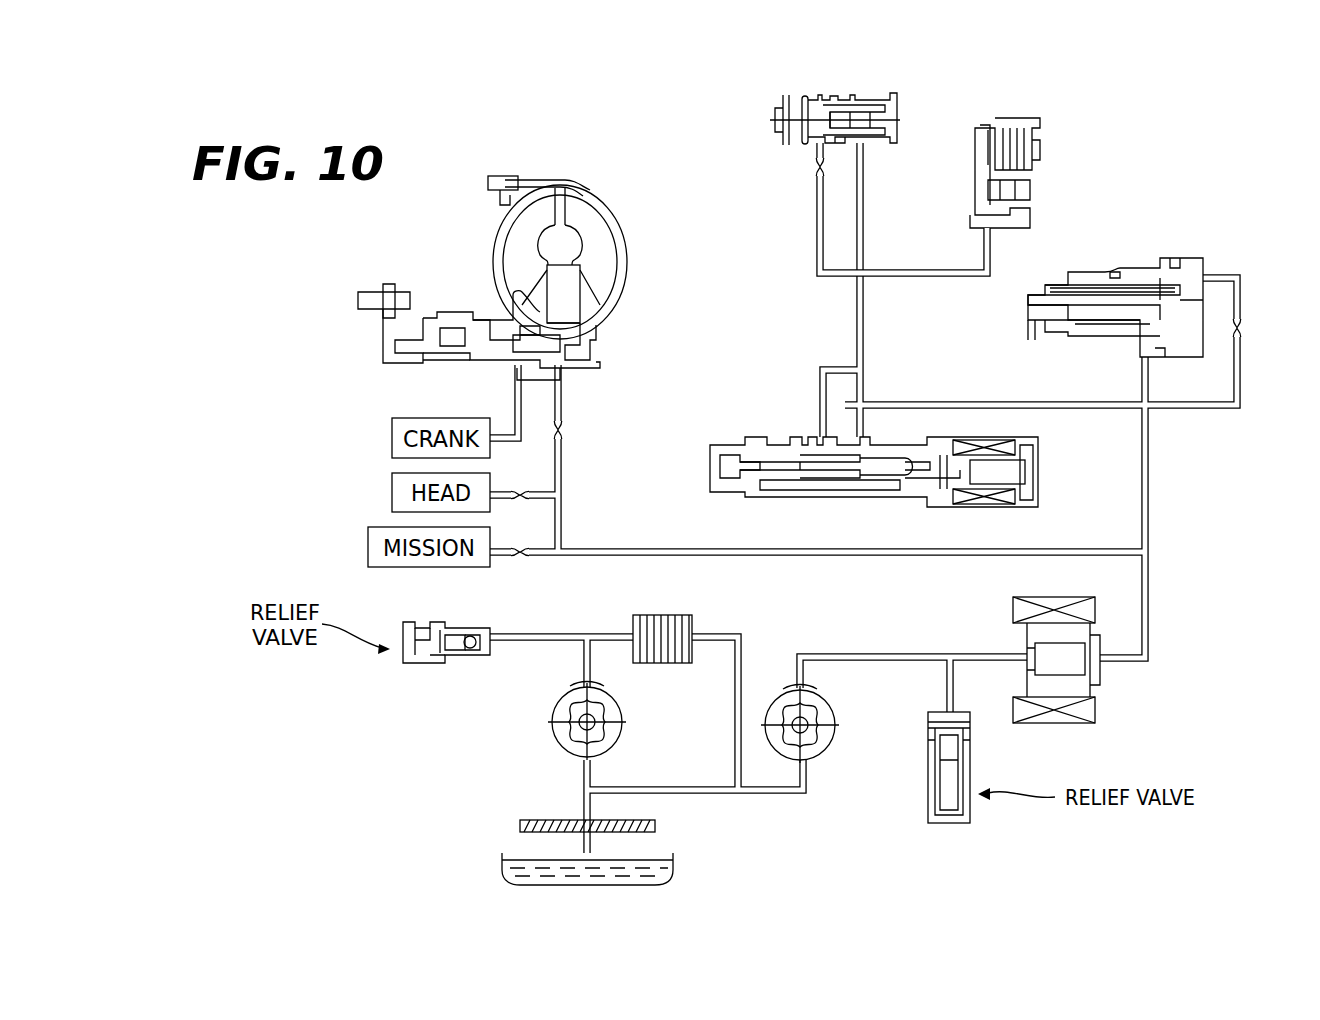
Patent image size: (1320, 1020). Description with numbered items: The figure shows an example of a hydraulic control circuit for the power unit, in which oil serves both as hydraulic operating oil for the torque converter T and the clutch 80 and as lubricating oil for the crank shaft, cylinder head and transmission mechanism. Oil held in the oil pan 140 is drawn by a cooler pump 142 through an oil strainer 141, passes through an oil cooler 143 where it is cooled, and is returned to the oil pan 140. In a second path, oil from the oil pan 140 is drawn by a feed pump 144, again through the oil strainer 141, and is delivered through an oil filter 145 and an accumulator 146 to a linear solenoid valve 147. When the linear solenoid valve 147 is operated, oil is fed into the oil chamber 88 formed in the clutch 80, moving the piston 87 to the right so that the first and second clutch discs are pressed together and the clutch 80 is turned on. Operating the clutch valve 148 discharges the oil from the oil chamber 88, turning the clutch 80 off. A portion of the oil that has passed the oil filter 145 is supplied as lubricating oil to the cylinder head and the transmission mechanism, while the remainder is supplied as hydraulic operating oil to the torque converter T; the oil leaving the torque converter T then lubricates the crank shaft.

The torque converter T is at (590, 176).
The clutch valve 148 is at (818, 86).
The clutch 80 is at (1075, 88).
The piston 87 is at (888, 172).
The oil chamber 88 is at (903, 246).
The accumulator 146 is at (1197, 218).
The linear solenoid valve 147 is at (706, 476).
The oil cooler 143 is at (700, 617).
The cooler pump 142 is at (546, 738).
The feed pump 144 is at (836, 699).
The oil filter 145 is at (1098, 697).
The oil strainer 141 is at (532, 813).
The oil pan 140 is at (685, 871).